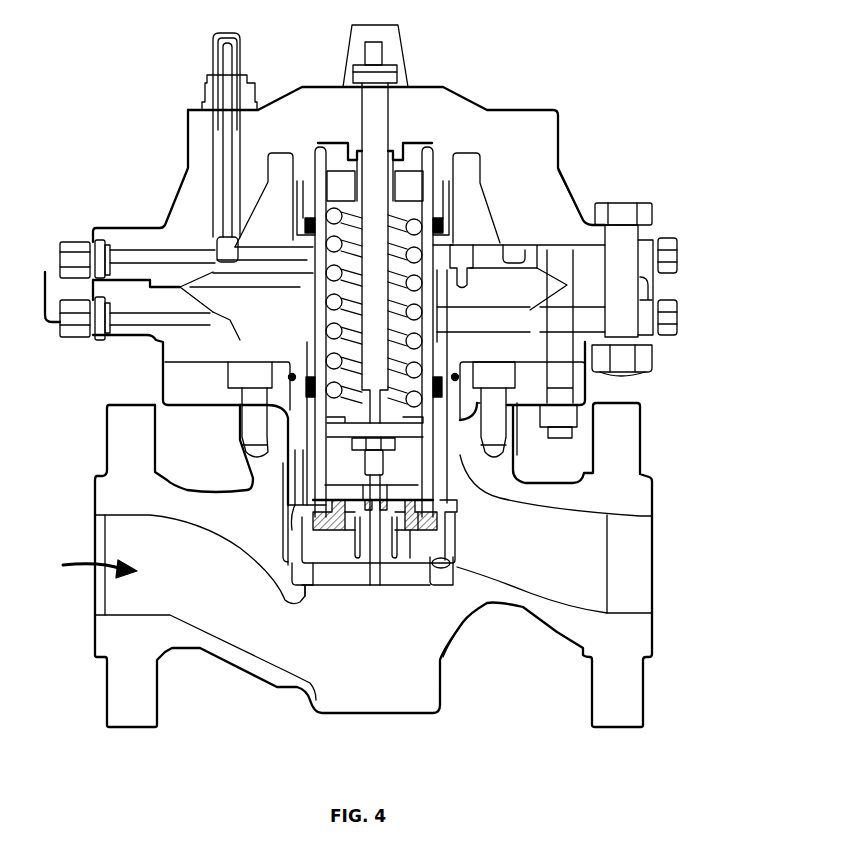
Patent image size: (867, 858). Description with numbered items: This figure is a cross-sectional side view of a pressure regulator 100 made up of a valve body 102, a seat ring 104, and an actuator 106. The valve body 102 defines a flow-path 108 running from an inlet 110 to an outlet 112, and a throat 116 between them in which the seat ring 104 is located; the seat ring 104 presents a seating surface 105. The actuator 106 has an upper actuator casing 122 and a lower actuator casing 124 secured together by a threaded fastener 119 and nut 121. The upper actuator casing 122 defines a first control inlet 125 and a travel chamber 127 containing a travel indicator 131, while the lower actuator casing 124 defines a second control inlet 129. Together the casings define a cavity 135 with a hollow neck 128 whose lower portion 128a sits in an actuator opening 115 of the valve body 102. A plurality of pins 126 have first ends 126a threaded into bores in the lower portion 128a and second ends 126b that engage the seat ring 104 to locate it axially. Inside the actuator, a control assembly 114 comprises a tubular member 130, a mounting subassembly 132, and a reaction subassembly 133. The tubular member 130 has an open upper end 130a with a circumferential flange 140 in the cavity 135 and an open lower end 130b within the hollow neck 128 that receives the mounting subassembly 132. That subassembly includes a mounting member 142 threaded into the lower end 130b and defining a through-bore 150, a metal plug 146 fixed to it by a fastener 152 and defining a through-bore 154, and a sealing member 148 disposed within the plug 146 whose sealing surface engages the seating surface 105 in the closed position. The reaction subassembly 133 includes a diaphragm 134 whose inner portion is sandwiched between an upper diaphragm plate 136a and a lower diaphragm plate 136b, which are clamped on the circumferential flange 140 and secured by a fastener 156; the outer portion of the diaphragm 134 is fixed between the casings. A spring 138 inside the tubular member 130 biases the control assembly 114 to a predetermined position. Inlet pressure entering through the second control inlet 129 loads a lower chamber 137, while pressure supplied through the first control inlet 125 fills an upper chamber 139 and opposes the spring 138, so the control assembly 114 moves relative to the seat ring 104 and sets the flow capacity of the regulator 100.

The pressure regulator 100 is at (586, 76).
The valve body 102 is at (650, 703).
The seat ring 104 is at (337, 577).
The seating surface 105 is at (455, 565).
The actuator 106 is at (566, 138).
The flow-path 108 is at (76, 553).
The inlet 110 is at (118, 515).
The outlet 112 is at (637, 517).
The control assembly 114 is at (422, 240).
The actuator opening 115 is at (461, 458).
The throat 116 is at (303, 590).
The threaded fastener 119 is at (627, 235).
The nut 121 is at (645, 360).
The upper actuator casing 122 is at (557, 182).
The lower actuator casing 124 is at (646, 295).
The first control inlet 125 is at (137, 250).
The pins 126 is at (457, 536).
The first ends 126a is at (457, 513).
The second ends 126b is at (458, 565).
The travel chamber 127 is at (215, 163).
The hollow neck 128 is at (302, 452).
The lower portion 128a is at (292, 533).
The second control inlet 129 is at (147, 322).
The tubular member 130 is at (313, 343).
The upper end 130a is at (320, 202).
The lower end 130b is at (433, 355).
The travel indicator 131 is at (218, 57).
The mounting subassembly 132 is at (397, 494).
The reaction subassembly 133 is at (516, 304).
The diaphragm 134 is at (567, 285).
The cavity 135 is at (237, 331).
The upper diaphragm plate 136a is at (550, 207).
The lower diaphragm plate 136b is at (585, 340).
The lower chamber 137 is at (225, 318).
The spring 138 is at (352, 218).
The upper chamber 139 is at (470, 162).
The circumferential flange 140 is at (312, 267).
The mounting member 142 is at (300, 483).
The plug 146 is at (410, 514).
The sealing member 148 is at (428, 511).
The through-bore 150 is at (345, 474).
The fastener 152 is at (371, 516).
The through-bore 154 is at (352, 512).
The fastener 156 is at (462, 268).